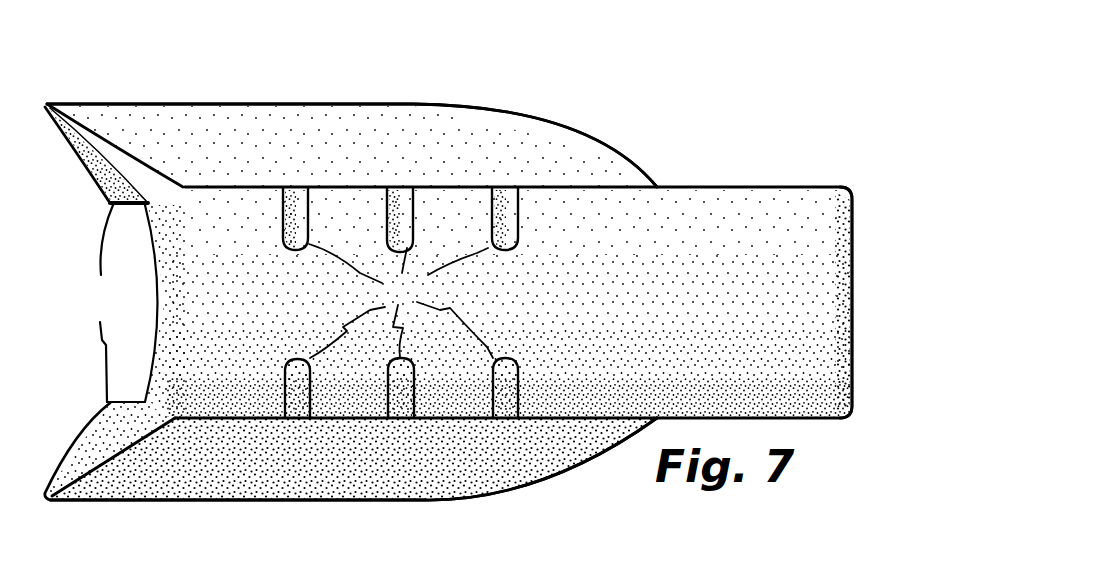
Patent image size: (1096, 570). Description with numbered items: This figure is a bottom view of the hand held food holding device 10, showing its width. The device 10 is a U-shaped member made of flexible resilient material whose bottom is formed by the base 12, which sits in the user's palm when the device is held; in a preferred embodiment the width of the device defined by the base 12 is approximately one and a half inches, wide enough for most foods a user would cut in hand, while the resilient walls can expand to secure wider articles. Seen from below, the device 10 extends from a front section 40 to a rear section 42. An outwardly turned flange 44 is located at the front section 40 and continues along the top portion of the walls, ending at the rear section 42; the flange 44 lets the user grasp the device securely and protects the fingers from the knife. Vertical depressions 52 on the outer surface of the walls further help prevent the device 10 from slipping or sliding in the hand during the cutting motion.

The hand held food holding device 10 is at (228, 75).
The base 12 is at (647, 291).
The front section 40 is at (75, 268).
The rear section 42 is at (862, 286).
The outwardly turned flange 44 is at (392, 120).
The vertical depressions 52 is at (400, 303).